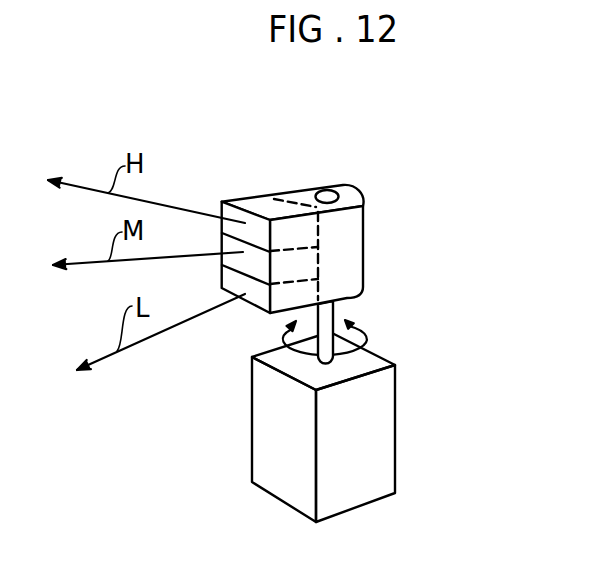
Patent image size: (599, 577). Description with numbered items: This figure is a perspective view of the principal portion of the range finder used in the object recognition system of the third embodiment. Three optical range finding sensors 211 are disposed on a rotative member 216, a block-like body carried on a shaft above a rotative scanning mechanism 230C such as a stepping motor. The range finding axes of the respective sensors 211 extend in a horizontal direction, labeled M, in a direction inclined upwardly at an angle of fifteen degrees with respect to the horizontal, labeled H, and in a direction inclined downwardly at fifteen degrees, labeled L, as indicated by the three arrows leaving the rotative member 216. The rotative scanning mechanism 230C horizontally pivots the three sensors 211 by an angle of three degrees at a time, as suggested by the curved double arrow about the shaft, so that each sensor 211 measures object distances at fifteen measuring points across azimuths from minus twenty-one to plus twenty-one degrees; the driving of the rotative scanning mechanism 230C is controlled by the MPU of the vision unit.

The optical range finding sensor 211 is at (253, 203).
The rotative member 216 is at (345, 258).
The rotative scanning mechanism 230C is at (372, 445).